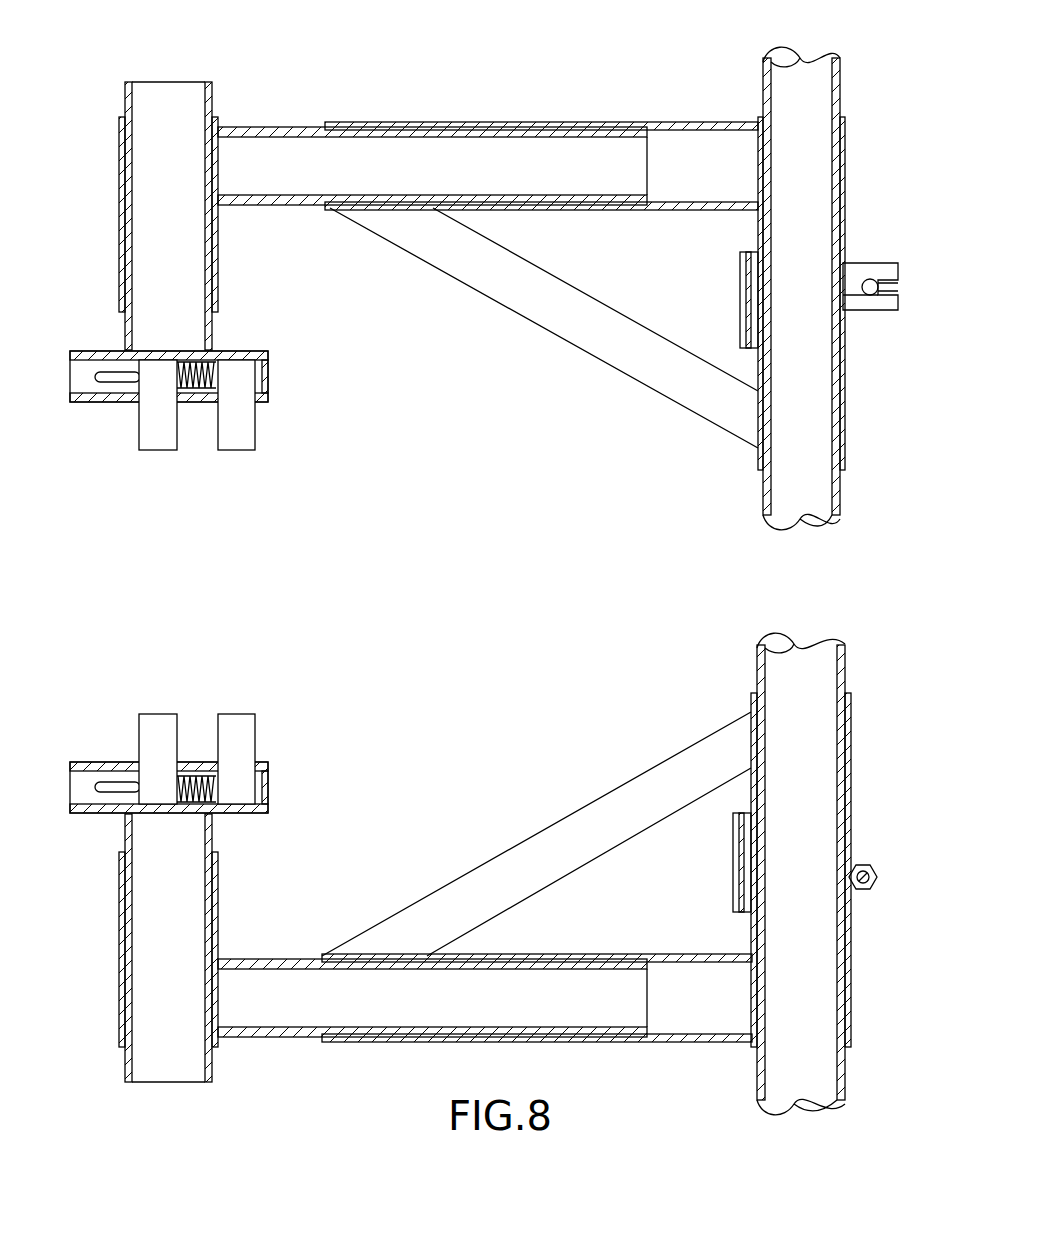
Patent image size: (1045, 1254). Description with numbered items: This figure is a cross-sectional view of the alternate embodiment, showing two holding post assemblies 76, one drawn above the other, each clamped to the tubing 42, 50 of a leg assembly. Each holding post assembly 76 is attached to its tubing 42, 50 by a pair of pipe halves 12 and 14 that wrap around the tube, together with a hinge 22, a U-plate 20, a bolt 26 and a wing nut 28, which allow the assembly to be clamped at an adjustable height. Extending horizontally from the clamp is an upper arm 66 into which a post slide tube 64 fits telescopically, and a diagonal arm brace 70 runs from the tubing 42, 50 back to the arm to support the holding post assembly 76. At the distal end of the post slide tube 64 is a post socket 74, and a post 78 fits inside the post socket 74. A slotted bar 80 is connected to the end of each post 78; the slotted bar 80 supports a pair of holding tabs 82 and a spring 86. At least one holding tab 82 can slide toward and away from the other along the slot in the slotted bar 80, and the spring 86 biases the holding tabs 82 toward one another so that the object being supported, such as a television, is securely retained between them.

The pipe half 12 is at (853, 930).
The pipe half 14 is at (843, 210).
The U-plate 20 is at (855, 303).
The hinge 22 is at (740, 300).
The bolt 26 is at (872, 292).
The wing nut 28 is at (900, 290).
The tubing 42 is at (847, 660).
The tubing 50 is at (841, 85).
The post slide tube 64 is at (270, 127).
The upper arm 66 is at (695, 122).
The arm brace 70 is at (540, 326).
The post socket 74 is at (120, 235).
The holding post assembly 76 is at (232, 497).
The post 78 is at (163, 100).
The slotted bar 80 is at (262, 380).
The holding tab 82 is at (150, 430).
The spring 86 is at (195, 388).